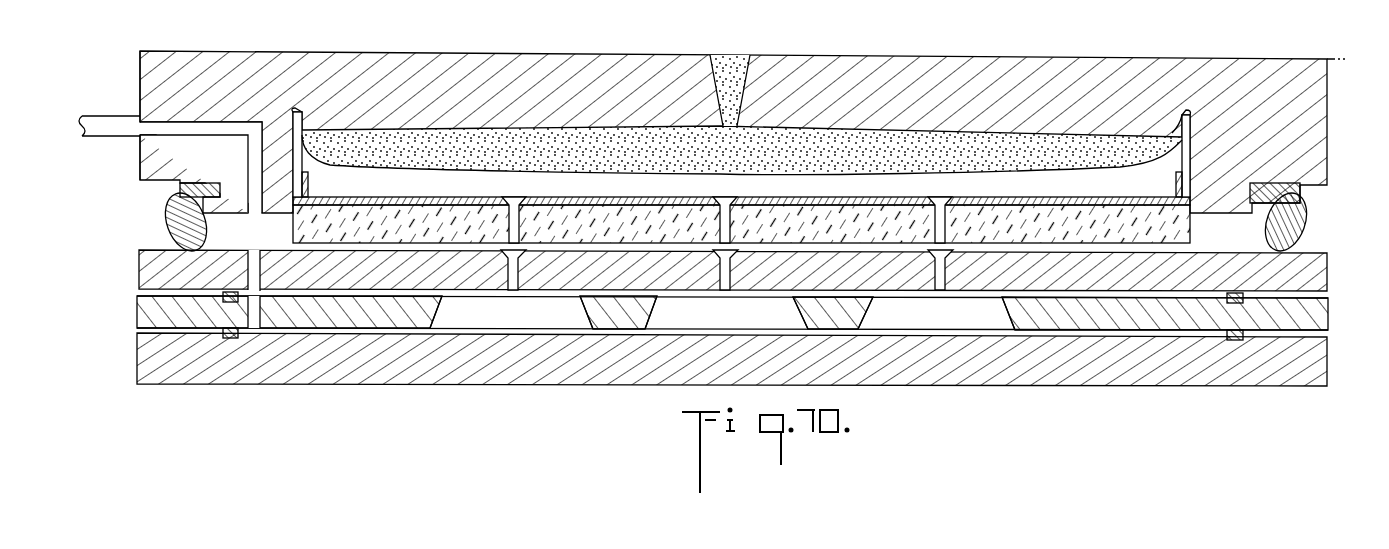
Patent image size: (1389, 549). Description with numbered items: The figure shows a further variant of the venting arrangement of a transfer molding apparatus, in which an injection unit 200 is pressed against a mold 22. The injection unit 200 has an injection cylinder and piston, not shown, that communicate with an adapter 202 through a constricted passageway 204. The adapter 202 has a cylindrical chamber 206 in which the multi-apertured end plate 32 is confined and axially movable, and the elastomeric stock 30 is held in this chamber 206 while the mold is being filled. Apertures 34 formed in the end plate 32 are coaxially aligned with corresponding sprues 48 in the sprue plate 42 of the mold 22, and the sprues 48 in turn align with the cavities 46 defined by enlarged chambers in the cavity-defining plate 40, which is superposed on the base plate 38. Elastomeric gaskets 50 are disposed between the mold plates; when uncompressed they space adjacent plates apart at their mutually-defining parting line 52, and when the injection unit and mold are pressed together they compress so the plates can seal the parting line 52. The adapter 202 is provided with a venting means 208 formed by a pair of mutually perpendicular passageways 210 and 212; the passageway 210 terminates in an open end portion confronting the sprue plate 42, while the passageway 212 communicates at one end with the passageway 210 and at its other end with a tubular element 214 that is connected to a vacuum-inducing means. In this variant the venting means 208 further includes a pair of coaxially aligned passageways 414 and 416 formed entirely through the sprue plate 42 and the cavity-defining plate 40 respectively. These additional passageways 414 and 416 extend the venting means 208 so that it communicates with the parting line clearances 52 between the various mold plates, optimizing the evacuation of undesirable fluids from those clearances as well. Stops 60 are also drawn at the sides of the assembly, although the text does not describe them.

The injection unit 200 is at (928, 85).
The adapter 202 is at (790, 75).
The constricted passageway 204 is at (724, 60).
The cylindrical chamber 206 is at (1190, 151).
The venting means 208 is at (121, 105).
The passageway 210 is at (273, 127).
The passageway 212 is at (220, 124).
The tubular element 214 is at (96, 140).
The elastomeric stock 30 is at (479, 146).
The multi-apertured end plate 32 is at (600, 220).
The apertures 34 is at (508, 222).
The stops 60 is at (168, 225).
The sprue plate 42 is at (1322, 268).
The passageway 414 is at (252, 268).
The sprues 48 is at (519, 271).
The cavity-defining plate 40 is at (1318, 316).
The parting line 52 is at (832, 330).
The cavities 46 is at (446, 318).
The passageway 416 is at (252, 312).
The elastomeric gaskets 50 is at (238, 330).
The mold 22 is at (512, 387).
The base plate 38 is at (1290, 388).